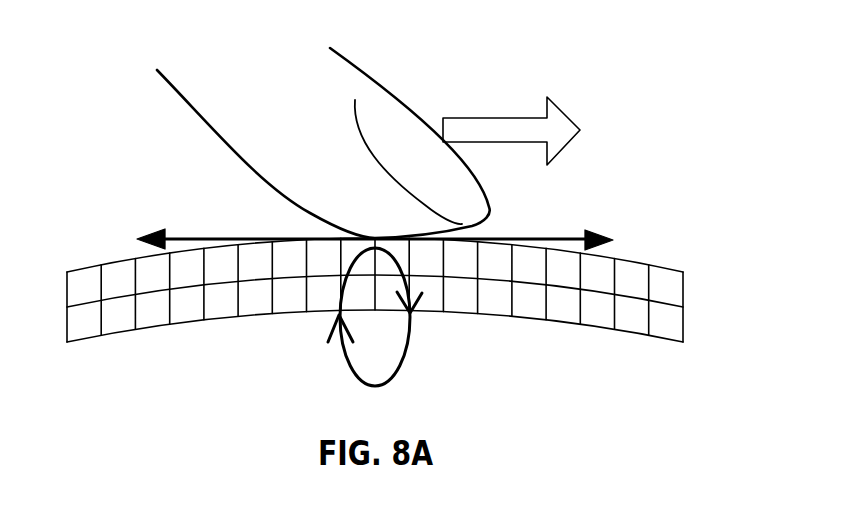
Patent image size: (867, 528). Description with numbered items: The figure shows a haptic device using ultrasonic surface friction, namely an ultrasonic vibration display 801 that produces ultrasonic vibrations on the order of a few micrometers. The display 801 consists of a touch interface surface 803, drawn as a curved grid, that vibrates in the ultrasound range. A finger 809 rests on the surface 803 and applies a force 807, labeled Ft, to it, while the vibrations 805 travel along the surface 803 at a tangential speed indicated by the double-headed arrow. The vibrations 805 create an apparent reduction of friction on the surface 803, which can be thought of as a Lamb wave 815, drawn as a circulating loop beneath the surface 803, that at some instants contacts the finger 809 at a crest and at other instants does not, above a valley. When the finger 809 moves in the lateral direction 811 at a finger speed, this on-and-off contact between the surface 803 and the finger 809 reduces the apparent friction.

The ultrasonic vibration display 801 is at (100, 95).
The touch interface surface 803 is at (84, 266).
The vibrations 805 is at (584, 228).
The force 807 is at (228, 198).
The finger 809 is at (358, 80).
The lateral direction 811 is at (550, 98).
The Lamb wave 815 is at (412, 343).